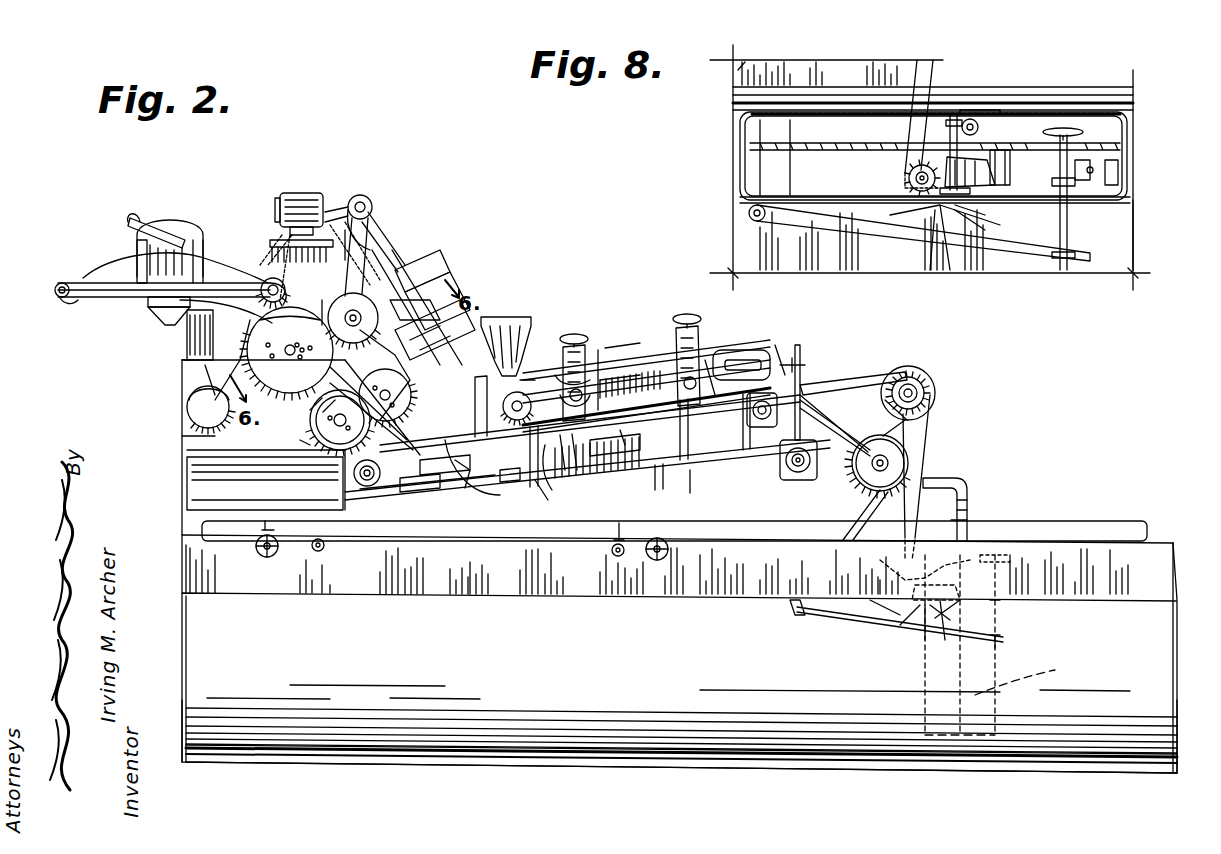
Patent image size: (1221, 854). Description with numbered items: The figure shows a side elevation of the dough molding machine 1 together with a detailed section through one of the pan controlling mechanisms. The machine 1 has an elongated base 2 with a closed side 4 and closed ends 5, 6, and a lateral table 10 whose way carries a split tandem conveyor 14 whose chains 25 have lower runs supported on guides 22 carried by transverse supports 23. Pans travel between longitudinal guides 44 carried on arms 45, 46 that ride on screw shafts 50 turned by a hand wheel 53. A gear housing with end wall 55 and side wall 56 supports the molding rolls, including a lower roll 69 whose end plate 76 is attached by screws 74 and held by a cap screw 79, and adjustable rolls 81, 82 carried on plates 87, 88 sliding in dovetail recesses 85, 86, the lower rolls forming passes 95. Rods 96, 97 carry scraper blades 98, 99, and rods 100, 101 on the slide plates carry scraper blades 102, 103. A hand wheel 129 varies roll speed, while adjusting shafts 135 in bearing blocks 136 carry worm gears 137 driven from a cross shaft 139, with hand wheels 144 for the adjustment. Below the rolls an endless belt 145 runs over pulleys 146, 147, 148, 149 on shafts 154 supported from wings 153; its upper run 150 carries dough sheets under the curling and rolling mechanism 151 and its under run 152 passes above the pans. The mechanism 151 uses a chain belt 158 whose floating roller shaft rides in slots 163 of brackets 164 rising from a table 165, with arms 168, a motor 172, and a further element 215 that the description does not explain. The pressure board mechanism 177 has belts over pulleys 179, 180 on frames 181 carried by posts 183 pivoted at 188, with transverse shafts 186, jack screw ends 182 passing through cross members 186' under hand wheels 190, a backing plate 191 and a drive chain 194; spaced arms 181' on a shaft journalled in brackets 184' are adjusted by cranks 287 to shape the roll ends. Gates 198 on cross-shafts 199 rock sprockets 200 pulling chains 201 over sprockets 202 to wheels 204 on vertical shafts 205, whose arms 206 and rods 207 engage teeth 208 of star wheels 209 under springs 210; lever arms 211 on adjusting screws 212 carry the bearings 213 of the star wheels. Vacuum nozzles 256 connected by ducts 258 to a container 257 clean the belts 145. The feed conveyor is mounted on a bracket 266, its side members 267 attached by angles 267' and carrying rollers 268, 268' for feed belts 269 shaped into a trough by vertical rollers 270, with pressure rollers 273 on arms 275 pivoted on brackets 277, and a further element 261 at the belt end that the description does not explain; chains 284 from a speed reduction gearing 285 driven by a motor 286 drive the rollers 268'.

In FIG. 2, the dough molding machine 1 is at (1183, 545).
In FIG. 2, the elongated base 2 is at (1040, 767).
In FIG. 2, the closed side of base 4 is at (543, 720).
In FIG. 8, the closed side of base 4 is at (1120, 240).
In FIG. 2, the closed end of base 5 is at (180, 738).
In FIG. 2, the closed end of base 6 is at (1180, 725).
In FIG. 2, the table 10 is at (195, 570).
In FIG. 8, the table 10 is at (738, 128).
In FIG. 8, the tandem conveyor 14 is at (740, 165).
In FIG. 8, the guide 22 is at (776, 157).
In FIG. 8, the transverse support 23 is at (1125, 180).
In FIG. 8, the sprocket chain 25 is at (750, 147).
In FIG. 2, the longitudinal guide 44 is at (200, 528).
In FIG. 8, the longitudinal guide 44 is at (740, 88).
In FIG. 2, the arm 45 is at (262, 530).
In FIG. 2, the arm 46 is at (612, 545).
In FIG. 2, the transverse screw shaft 50 is at (613, 556).
In FIG. 2, the hand wheel 53 is at (258, 555).
In FIG. 2, the end wall of gear housing 55 is at (182, 437).
In FIG. 2, the side wall of gear housing 56 is at (188, 330).
In FIG. 2, the lower roll 69 is at (312, 436).
In FIG. 2, the screw 74 is at (270, 355).
In FIG. 2, the end plate 76 is at (240, 370).
In FIG. 2, the cap screw 79 is at (266, 343).
In FIG. 2, the adjustable upper roll 81 is at (395, 258).
In FIG. 2, the adjustable lower roll 82 is at (307, 409).
In FIG. 2, the dovetail recess 85 is at (442, 285).
In FIG. 2, the dovetail recess 86 is at (262, 280).
In FIG. 2, the slide plate 87 is at (422, 262).
In FIG. 2, the slide plate 88 is at (435, 327).
In FIG. 2, the pass 95 is at (316, 420).
In FIG. 2, the rod 96 is at (290, 409).
In FIG. 2, the rod 97 is at (277, 445).
In FIG. 2, the scraper blade 98 is at (286, 353).
In FIG. 2, the scraper blade 99 is at (320, 463).
In FIG. 2, the rod 100 is at (294, 319).
In FIG. 2, the rod 101 is at (388, 398).
In FIG. 2, the scraper blade 102 is at (312, 337).
In FIG. 2, the scraper blade 103 is at (340, 468).
In FIG. 2, the hand wheel 129 is at (200, 408).
In FIG. 2, the adjusting shaft 135 is at (315, 305).
In FIG. 2, the bearing block 136 is at (432, 300).
In FIG. 2, the worm gear 137 is at (507, 316).
In FIG. 2, the cross shaft 139 is at (380, 312).
In FIG. 2, the hand wheel 144 is at (425, 284).
In FIG. 2, the endless belt 145 is at (660, 470).
In FIG. 2, the pulley 146 is at (385, 482).
In FIG. 2, the pulley 147 is at (835, 421).
In FIG. 2, the pulley 148 is at (905, 465).
In FIG. 2, the pulley 149 is at (788, 480).
In FIG. 2, the upper run 150 is at (574, 471).
In FIG. 2, the curling and rolling mechanism 151 is at (503, 392).
In FIG. 2, the under run 152 is at (500, 490).
In FIG. 2, the wing 153 is at (618, 378).
In FIG. 8, the wing 153 is at (748, 62).
In FIG. 2, the shaft 154 is at (890, 460).
In FIG. 2, the endless chain belt 158 is at (498, 500).
In FIG. 2, the slot 163 is at (423, 473).
In FIG. 2, the bracket 164 is at (468, 478).
In FIG. 2, the table 165 is at (564, 499).
In FIG. 2, the arm 168 is at (495, 464).
In FIG. 2, the motor 172 is at (566, 440).
In FIG. 2, the pressure board mechanism 177 is at (620, 430).
In FIG. 2, the pulley 179 is at (570, 332).
In FIG. 2, the pulley 180 is at (802, 352).
In FIG. 2, the frame 181 is at (636, 324).
In FIG. 2, the spaced arm 181' is at (736, 425).
In FIG. 2, the threaded upper end of jack screw 182 is at (741, 358).
In FIG. 2, the post 183 is at (725, 345).
In FIG. 2, the bracket 184' is at (794, 338).
In FIG. 2, the transverse shaft 186 is at (646, 360).
In FIG. 2, the cross member 186' is at (651, 332).
In FIG. 2, the pivotal connection 188 is at (646, 405).
In FIG. 2, the hand wheel 190 is at (686, 314).
In FIG. 2, the backing plate 191 is at (598, 348).
In FIG. 2, the chain 194 is at (557, 395).
In FIG. 2, the gate 198 is at (898, 432).
In FIG. 2, the cross-shaft 199 is at (915, 380).
In FIG. 2, the sprocket 200 is at (925, 390).
In FIG. 2, the chain 201 is at (910, 378).
In FIG. 8, the chain 201 is at (936, 58).
In FIG. 8, the sprocket 202 is at (908, 176).
In FIG. 8, the wheel 204 is at (900, 228).
In FIG. 8, the vertical shaft 205 is at (952, 113).
In FIG. 8, the arm 206 is at (972, 118).
In FIG. 8, the rod 207 is at (985, 112).
In FIG. 2, the tooth 208 is at (935, 640).
In FIG. 8, the tooth 208 is at (962, 255).
In FIG. 2, the star wheel 209 is at (870, 618).
In FIG. 8, the star wheel 209 is at (1005, 150).
In FIG. 2, the spring 210 is at (838, 382).
In FIG. 2, the lever arm 211 is at (915, 630).
In FIG. 8, the lever arm 211 is at (935, 272).
In FIG. 2, the adjusting screw 212 is at (1002, 625).
In FIG. 8, the adjusting screw 212 is at (1085, 245).
In FIG. 2, the bearing 213 is at (960, 645).
In FIG. 8, the bearing 213 is at (965, 255).
In FIG. 2, the rod 215 is at (525, 375).
In FIG. 2, the vacuum nozzle 256 is at (950, 482).
In FIG. 2, the container 257 is at (1000, 694).
In FIG. 2, the duct 258 is at (970, 515).
In FIG. 2, the pin 261 is at (60, 300).
In FIG. 2, the bracket 266 is at (160, 325).
In FIG. 2, the side member 267 is at (162, 310).
In FIG. 2, the angle 267' is at (141, 331).
In FIG. 2, the roller 268 is at (58, 333).
In FIG. 2, the roller 268' is at (255, 253).
In FIG. 2, the feed belt 269 is at (95, 275).
In FIG. 2, the vertical roller 270 is at (138, 240).
In FIG. 2, the pressure roller 273 is at (185, 222).
In FIG. 2, the arm 275 is at (166, 215).
In FIG. 2, the bracket 277 is at (128, 216).
In FIG. 2, the chain 284 is at (348, 205).
In FIG. 2, the speed reduction gearing 285 is at (368, 198).
In FIG. 2, the motor 286 is at (303, 195).
In FIG. 2, the crank 287 is at (815, 352).